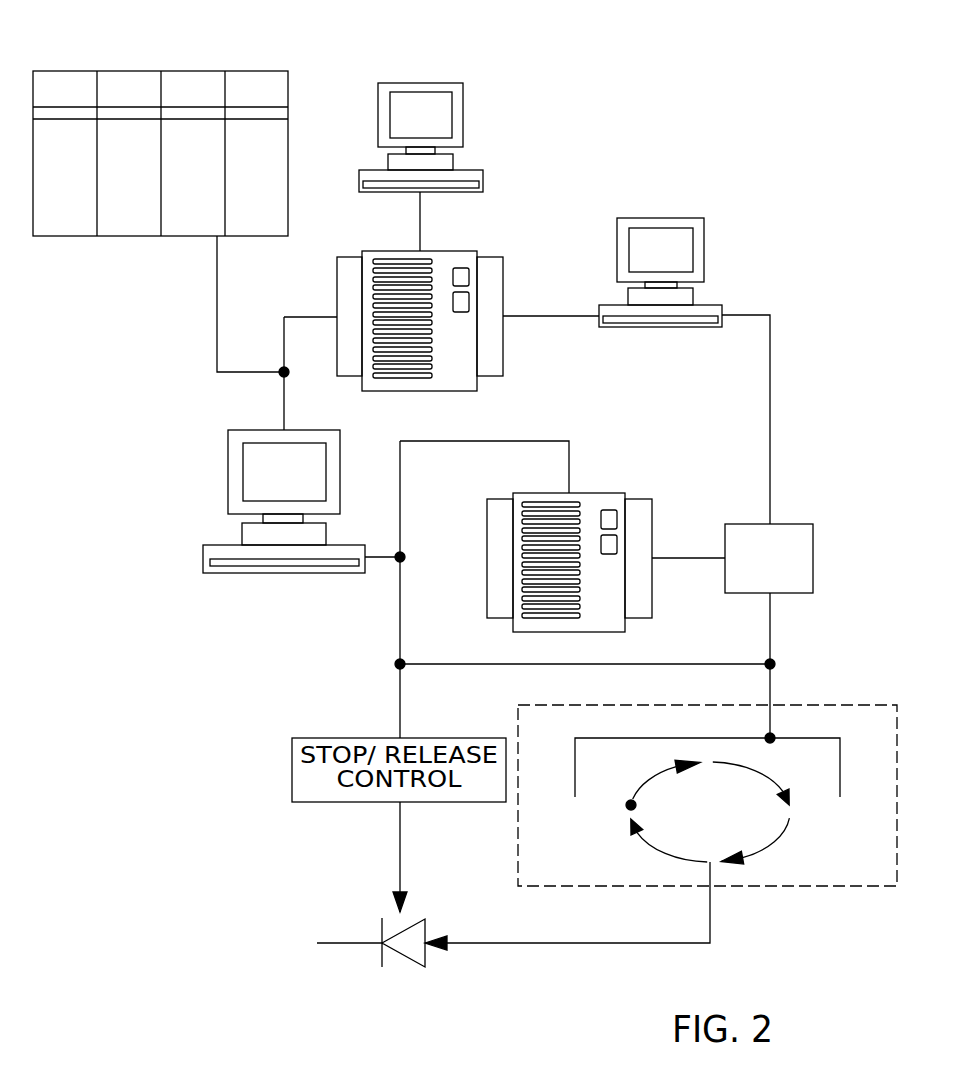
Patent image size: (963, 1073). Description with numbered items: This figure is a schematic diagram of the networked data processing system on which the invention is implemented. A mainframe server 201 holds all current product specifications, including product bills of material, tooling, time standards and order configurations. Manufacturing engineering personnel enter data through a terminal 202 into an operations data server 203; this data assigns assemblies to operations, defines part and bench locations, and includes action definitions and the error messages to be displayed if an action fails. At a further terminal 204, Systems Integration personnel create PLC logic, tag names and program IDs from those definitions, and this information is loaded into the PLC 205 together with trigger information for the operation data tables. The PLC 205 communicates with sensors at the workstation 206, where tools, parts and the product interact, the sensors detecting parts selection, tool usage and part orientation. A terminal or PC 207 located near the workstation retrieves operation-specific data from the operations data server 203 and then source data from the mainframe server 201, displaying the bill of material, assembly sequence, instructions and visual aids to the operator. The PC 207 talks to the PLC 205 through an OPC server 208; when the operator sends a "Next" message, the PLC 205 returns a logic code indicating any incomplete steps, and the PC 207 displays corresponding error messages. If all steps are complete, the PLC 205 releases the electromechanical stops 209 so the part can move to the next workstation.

The mainframe server 201 is at (183, 70).
The terminal 202 is at (464, 97).
The operations data server 203 is at (475, 251).
The systems integration terminal 204 is at (660, 217).
The PLC 205 is at (783, 523).
The workstation 206 is at (816, 887).
The terminal or PC 207 is at (228, 472).
The OPC server 208 is at (611, 492).
The electromechanical stops 209 is at (402, 956).